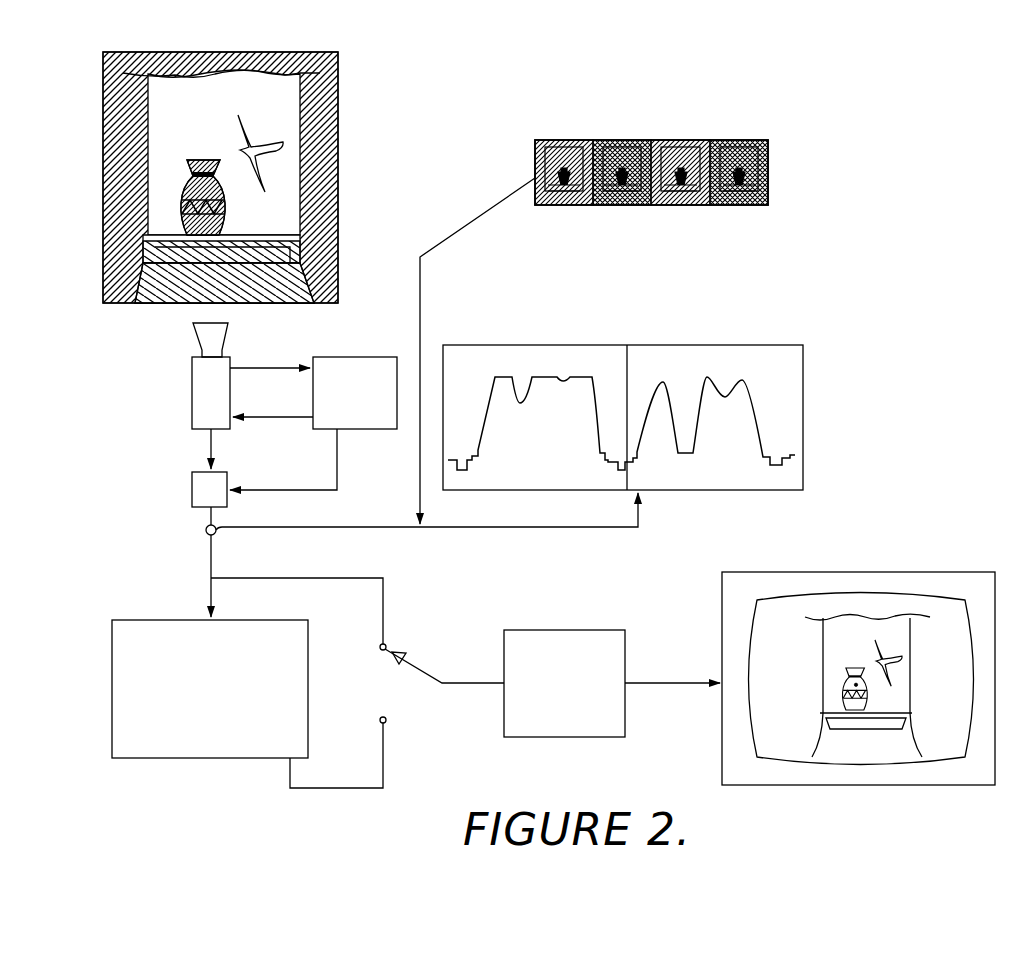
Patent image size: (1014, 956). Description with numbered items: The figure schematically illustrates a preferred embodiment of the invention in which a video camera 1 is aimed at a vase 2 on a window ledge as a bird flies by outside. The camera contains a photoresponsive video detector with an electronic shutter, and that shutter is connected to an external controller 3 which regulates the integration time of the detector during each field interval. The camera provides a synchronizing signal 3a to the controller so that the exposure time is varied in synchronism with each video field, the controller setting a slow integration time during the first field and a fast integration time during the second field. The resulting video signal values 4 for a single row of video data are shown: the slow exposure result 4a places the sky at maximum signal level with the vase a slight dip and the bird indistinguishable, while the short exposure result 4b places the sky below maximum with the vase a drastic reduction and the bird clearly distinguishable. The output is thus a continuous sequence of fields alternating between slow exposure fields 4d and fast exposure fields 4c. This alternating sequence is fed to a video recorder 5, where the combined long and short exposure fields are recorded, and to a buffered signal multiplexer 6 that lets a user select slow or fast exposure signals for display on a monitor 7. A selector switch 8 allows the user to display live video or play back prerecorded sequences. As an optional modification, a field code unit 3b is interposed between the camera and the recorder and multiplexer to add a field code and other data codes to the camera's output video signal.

The video camera 1 is at (190, 389).
The vase 2 is at (231, 212).
The controller 3 is at (313, 423).
The synchronizing signal 3a is at (267, 363).
The field code unit 3b is at (190, 491).
The video signal values 4 is at (690, 376).
The slow exposure result 4a is at (540, 343).
The short exposure result 4b is at (730, 343).
The fast exposure fields 4c is at (622, 138).
The slow exposure fields 4d is at (680, 208).
The video recorder 5 is at (247, 683).
The buffered signal multiplexer 6 is at (612, 683).
The monitor 7 is at (869, 570).
The selector switch 8 is at (429, 664).